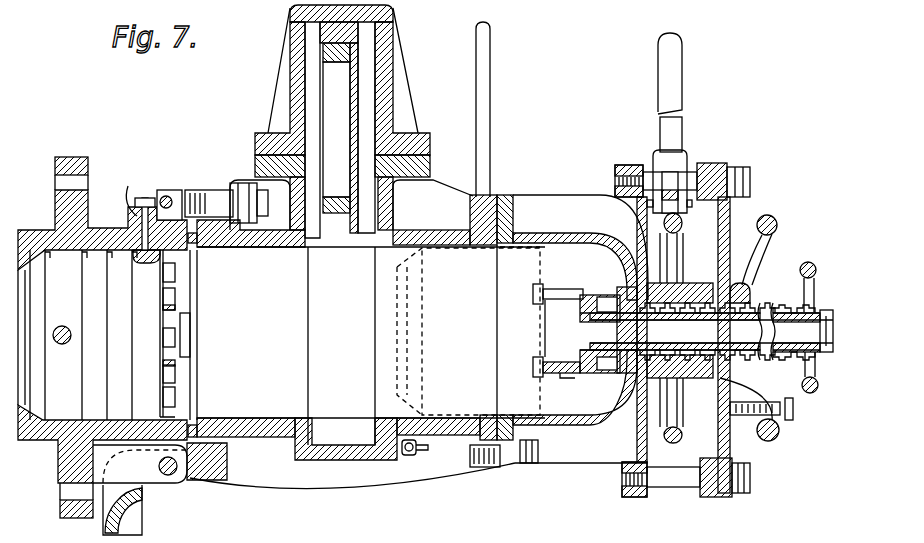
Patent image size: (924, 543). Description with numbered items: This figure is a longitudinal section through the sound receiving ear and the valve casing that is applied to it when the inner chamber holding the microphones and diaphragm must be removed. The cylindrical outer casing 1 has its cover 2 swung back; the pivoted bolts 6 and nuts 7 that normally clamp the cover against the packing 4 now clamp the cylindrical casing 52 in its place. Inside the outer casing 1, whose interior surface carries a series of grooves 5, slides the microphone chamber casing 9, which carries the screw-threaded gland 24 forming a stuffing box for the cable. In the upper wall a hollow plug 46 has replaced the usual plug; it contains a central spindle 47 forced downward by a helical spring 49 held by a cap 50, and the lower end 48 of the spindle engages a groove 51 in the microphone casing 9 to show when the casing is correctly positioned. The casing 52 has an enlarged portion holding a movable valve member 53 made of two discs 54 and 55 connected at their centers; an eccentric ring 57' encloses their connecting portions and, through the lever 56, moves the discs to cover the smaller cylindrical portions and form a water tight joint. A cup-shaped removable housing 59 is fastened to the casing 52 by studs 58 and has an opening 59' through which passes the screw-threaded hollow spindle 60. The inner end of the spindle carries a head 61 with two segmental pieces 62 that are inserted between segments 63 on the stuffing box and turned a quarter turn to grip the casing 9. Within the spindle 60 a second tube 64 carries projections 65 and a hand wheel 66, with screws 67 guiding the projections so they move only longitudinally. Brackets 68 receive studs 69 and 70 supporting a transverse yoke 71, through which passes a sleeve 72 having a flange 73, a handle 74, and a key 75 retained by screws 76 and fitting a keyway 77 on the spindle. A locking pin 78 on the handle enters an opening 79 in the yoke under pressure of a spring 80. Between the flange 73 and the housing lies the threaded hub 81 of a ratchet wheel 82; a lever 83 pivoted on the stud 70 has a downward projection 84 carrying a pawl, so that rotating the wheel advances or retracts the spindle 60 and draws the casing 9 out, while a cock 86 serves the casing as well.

The outer casing 1 is at (56, 445).
The cover 2 is at (138, 520).
The packing 4 is at (197, 430).
The grooves 5 is at (110, 308).
The pivoted bolts 6 is at (205, 205).
The nuts 7 is at (241, 190).
The microphone chamber casing 9 is at (150, 300).
The screw-threaded gland 24 is at (190, 341).
The hollow plug 46 is at (121, 192).
The central spindle 47 is at (166, 185).
The lower end of spindle 48 is at (178, 246).
The helical spring 49 is at (55, 191).
The cap 50 is at (170, 199).
The groove 51 is at (160, 256).
The cylindrical casing 52 is at (270, 440).
The movable valve member 53 is at (343, 120).
The disc 54 is at (310, 238).
The disc 55 is at (366, 240).
The lever 56 is at (485, 92).
The eccentric ring 57' is at (386, 49).
The screw-threaded studs 58 is at (530, 466).
The removable housing 59 is at (522, 297).
The opening 59' is at (610, 330).
The screw-threaded hollow spindle 60 is at (742, 313).
The head 61 is at (608, 367).
The segmental pieces 62 is at (543, 302).
The segments 63 is at (175, 307).
The tube 64 is at (578, 376).
The projections 65 is at (548, 364).
The hand wheel 66 is at (818, 262).
The screws 67 is at (553, 291).
The brackets 68 is at (632, 222).
The screw-threaded stud 69 is at (752, 181).
The screw-threaded stud 70 is at (752, 478).
The transverse yoke 71 is at (730, 452).
The sleeve 72 is at (752, 292).
The flange 73 is at (690, 290).
The handle 74 is at (777, 225).
The key 75 is at (744, 325).
The screws 76 is at (745, 290).
The keyway 77 is at (790, 306).
The locking pin 78 is at (794, 409).
The opening 79 is at (700, 420).
The spring 80 is at (779, 426).
The hub 81 is at (680, 262).
The ratchet wheel 82 is at (660, 460).
The lever 83 is at (683, 100).
The downward projection 84 is at (670, 200).
The cock 86 is at (410, 458).